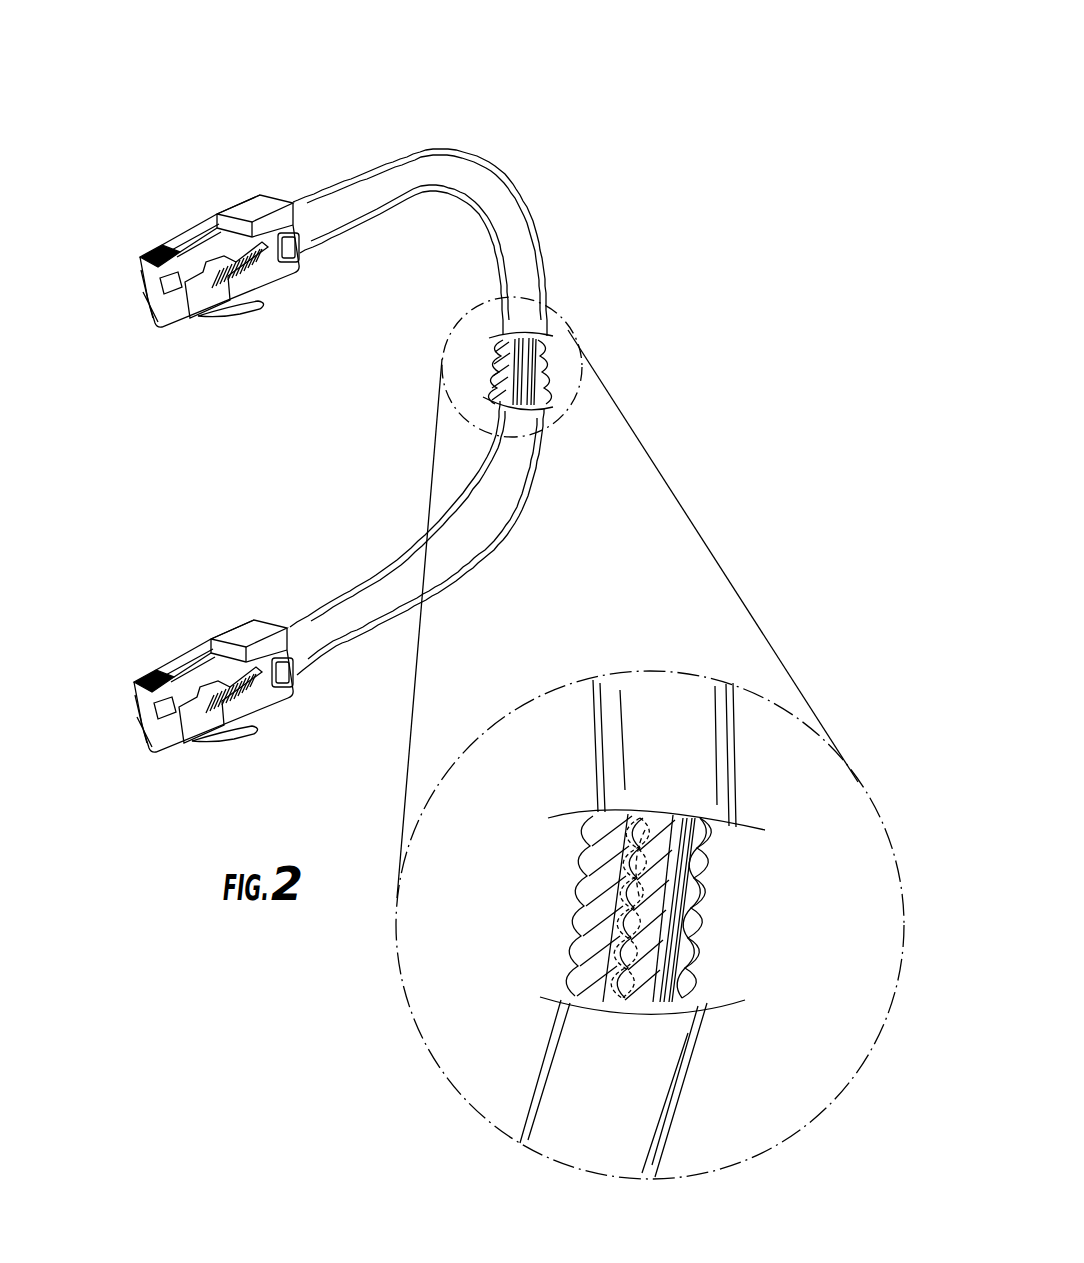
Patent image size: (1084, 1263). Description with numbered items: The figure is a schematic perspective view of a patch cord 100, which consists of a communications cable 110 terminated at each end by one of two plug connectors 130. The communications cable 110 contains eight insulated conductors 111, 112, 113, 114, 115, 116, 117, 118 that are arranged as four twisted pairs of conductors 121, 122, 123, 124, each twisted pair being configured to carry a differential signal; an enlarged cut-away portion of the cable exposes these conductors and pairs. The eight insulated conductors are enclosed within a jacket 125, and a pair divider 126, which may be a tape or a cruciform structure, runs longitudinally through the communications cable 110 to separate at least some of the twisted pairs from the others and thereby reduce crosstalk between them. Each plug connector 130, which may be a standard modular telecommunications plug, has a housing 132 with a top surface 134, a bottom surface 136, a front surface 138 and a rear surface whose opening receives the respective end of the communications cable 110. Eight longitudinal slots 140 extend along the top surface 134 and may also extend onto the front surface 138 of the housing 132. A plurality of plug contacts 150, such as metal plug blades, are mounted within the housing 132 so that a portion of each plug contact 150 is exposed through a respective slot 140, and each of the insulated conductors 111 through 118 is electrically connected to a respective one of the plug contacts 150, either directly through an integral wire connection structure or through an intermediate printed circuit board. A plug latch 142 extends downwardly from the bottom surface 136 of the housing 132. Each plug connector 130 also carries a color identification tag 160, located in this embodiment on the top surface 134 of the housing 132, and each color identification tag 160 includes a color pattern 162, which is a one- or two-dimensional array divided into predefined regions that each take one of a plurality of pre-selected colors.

The patch cord 100 is at (200, 91).
The communications cable 110 is at (358, 646).
The insulated conductor 111 is at (593, 878).
The insulated conductor 112 is at (592, 905).
The insulated conductor 113 is at (565, 995).
The insulated conductor 114 is at (627, 998).
The insulated conductor 115 is at (708, 932).
The insulated conductor 116 is at (702, 970).
The insulated conductor 117 is at (645, 830).
The insulated conductor 118 is at (625, 848).
The twisted pair of conductors 121 is at (488, 389).
The twisted pair of conductors 122 is at (654, 670).
The twisted pair of conductors 123 is at (661, 715).
The twisted pair of conductors 124 is at (680, 838).
The jacket 125 is at (383, 172).
The pair divider 126 is at (532, 352).
The plug connector 130 is at (209, 435).
The housing 132 is at (280, 203).
The top surface 134 is at (262, 197).
The bottom surface 136 is at (282, 268).
The front surface 138 is at (142, 278).
The longitudinal slot 140 is at (158, 245).
The plug latch 142 is at (254, 310).
The plug contact 150 is at (140, 263).
The color identification tag 160 is at (200, 214).
The color pattern 162 is at (209, 642).